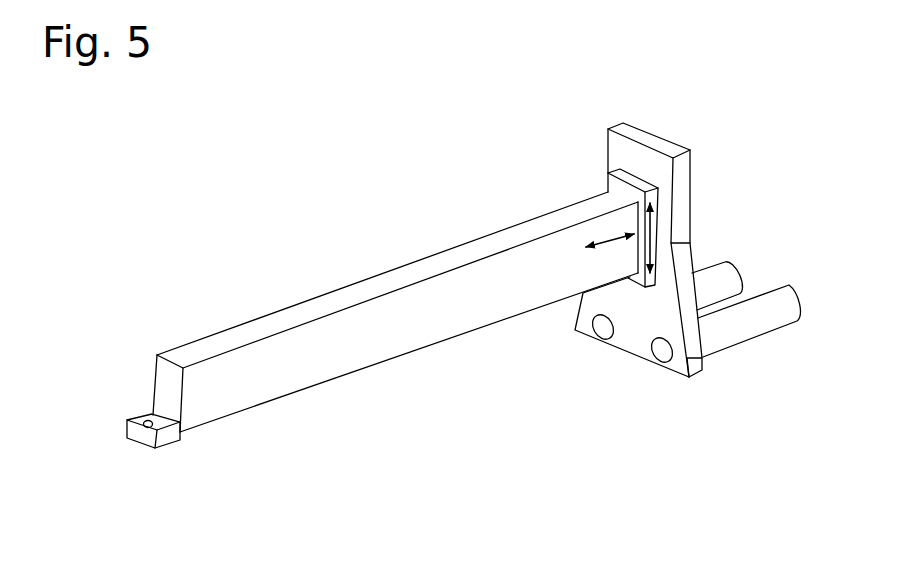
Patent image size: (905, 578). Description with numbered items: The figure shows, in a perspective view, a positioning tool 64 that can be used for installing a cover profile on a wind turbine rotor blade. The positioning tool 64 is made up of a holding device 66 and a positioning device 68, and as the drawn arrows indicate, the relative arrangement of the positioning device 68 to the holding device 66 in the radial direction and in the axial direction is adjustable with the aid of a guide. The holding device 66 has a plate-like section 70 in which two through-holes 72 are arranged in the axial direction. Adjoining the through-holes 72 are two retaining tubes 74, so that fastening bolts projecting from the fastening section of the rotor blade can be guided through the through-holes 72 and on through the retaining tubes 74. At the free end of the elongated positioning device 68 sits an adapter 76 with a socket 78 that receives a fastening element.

The positioning tool 64 is at (311, 176).
The holding device 66 is at (665, 131).
The positioning device 68 is at (261, 307).
The plate-like section 70 is at (682, 187).
The through-holes 72 is at (600, 328).
The retaining tubes 74 is at (722, 277).
The adapter 76 is at (173, 437).
The socket 78 is at (148, 428).